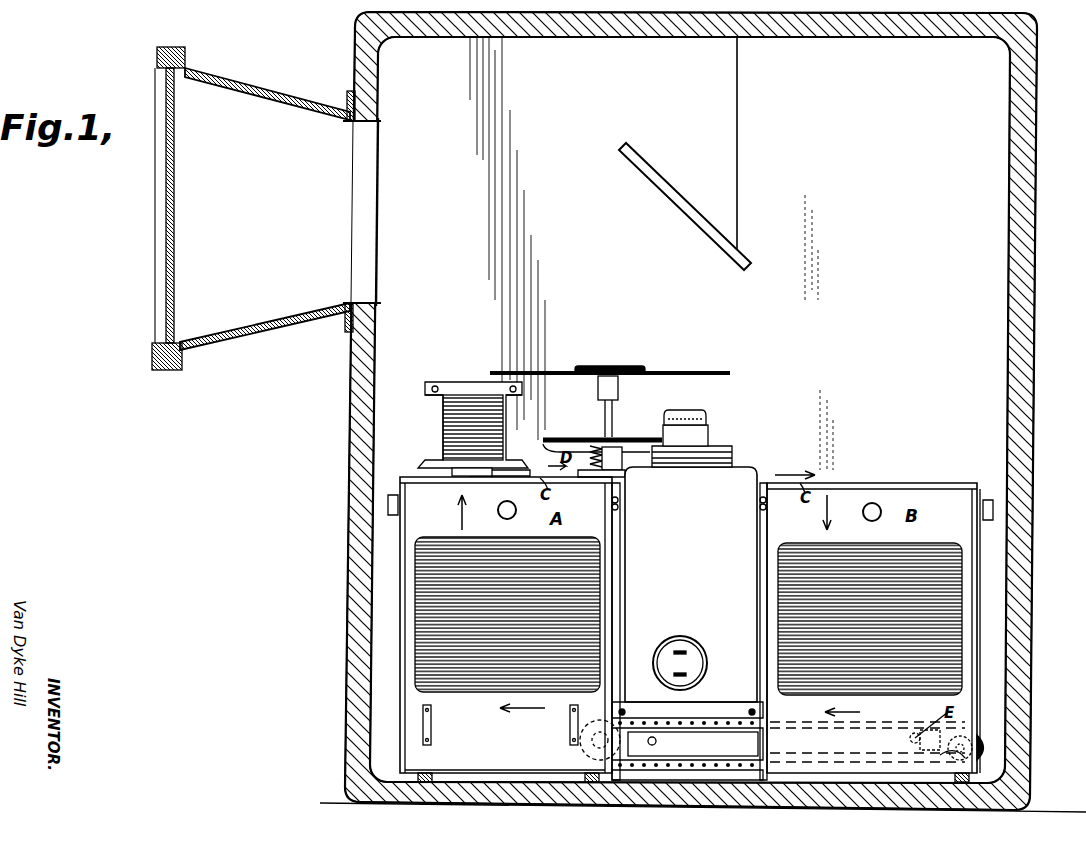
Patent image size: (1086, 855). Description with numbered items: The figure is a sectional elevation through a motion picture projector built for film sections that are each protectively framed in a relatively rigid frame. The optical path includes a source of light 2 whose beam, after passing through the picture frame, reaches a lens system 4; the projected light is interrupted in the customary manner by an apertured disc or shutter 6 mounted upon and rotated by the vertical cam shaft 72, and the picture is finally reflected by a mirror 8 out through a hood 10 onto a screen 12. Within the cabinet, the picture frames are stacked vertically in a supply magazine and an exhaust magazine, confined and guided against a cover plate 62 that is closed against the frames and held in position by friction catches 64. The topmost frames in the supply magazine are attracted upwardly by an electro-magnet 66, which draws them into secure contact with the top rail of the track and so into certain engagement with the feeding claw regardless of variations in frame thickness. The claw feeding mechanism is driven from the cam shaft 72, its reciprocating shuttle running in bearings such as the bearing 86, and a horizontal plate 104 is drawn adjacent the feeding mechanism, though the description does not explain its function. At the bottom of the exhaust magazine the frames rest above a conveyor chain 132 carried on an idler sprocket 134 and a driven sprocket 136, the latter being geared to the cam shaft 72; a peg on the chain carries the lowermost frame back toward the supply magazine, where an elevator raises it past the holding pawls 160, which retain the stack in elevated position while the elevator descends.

The source of light 2 is at (745, 480).
The lens system 4 is at (710, 432).
The shutter 6 is at (690, 372).
The mirror 8 is at (725, 228).
The hood 10 is at (290, 312).
The screen 12 is at (166, 272).
The cover plate 62 is at (930, 455).
The friction catches 64 is at (403, 500).
The electro-magnet 66 is at (450, 385).
The vertical cam shaft 72 is at (618, 418).
The bearing 86 is at (585, 477).
The plate 104 is at (604, 432).
The conveyor chain 132 is at (990, 738).
The idler sprocket 134 is at (950, 758).
The driven sprocket 136 is at (625, 725).
The holding pawls 160 is at (570, 718).